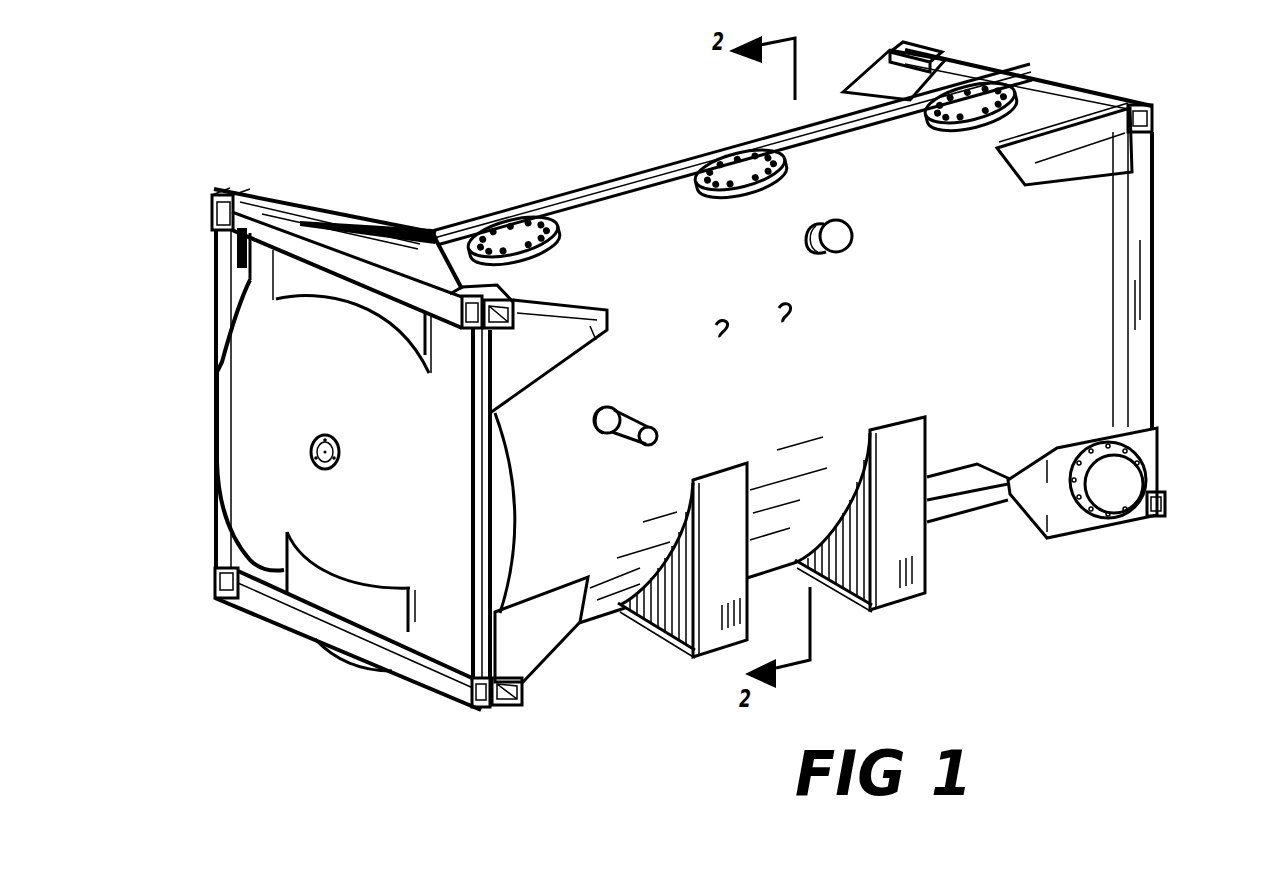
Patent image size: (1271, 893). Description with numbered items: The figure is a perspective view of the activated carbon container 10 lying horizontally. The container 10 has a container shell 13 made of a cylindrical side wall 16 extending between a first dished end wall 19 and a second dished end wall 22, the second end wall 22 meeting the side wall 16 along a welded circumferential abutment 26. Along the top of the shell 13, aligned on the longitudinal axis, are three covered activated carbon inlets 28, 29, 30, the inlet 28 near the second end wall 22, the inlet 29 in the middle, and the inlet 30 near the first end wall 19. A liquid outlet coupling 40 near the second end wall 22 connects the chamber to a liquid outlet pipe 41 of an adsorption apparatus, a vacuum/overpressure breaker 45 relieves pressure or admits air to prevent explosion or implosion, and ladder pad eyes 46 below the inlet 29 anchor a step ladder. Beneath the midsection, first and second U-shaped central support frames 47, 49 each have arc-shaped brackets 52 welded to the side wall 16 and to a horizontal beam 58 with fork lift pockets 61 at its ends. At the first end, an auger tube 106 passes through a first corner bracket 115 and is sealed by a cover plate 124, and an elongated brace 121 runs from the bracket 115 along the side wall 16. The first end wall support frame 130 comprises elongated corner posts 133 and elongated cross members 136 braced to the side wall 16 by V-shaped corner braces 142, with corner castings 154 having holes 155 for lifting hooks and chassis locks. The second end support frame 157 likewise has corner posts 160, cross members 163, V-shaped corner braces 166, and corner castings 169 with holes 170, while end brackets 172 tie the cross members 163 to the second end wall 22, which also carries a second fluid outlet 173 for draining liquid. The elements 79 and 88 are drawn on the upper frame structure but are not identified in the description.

The container 10 is at (331, 54).
The container shell 13 is at (654, 121).
The cylindrical side wall 16 is at (726, 474).
The first dished end wall 19 is at (1084, 53).
The second dished end wall 22 is at (366, 449).
The circumferential abutment 26 is at (550, 494).
The activated carbon inlet 28 is at (538, 240).
The activated carbon inlet 29 is at (755, 180).
The activated carbon inlet 30 is at (970, 129).
The liquid outlet coupling 40 is at (642, 410).
The liquid outlet pipe 41 is at (638, 471).
The vacuum/overpressure breaker 45 is at (846, 254).
The ladder pad eye 46 is at (753, 348).
The first U-shaped central support frame 47 is at (974, 570).
The second U-shaped central support frame 49 is at (771, 612).
The arc-shaped bracket 52 is at (772, 537).
The horizontal beam 58 is at (737, 564).
The fork lift pocket 61 is at (799, 665).
The top longitudinal beam 79 is at (732, 154).
The rear top beam 88 is at (1003, 119).
The auger tube 106 is at (1194, 436).
The first corner bracket 115 is at (1082, 483).
The elongated brace 121 is at (969, 466).
The cover plate 124 is at (1108, 480).
The first end wall support frame 130 is at (1170, 281).
The elongated corner post 133 is at (1184, 285).
The elongated cross member 136 is at (1136, 74).
The V-shaped corner brace 142 is at (967, 95).
The corner casting 154 is at (1072, 298).
The hole 155 is at (1187, 151).
The second end support frame 157 is at (159, 319).
The elongated corner post 160 is at (303, 454).
The elongated cross member 163 is at (348, 446).
The V-shaped corner brace 166 is at (410, 412).
The corner casting 169 is at (353, 446).
The hole 170 is at (415, 440).
The end bracket 172 is at (340, 432).
The second fluid outlet 173 is at (361, 453).